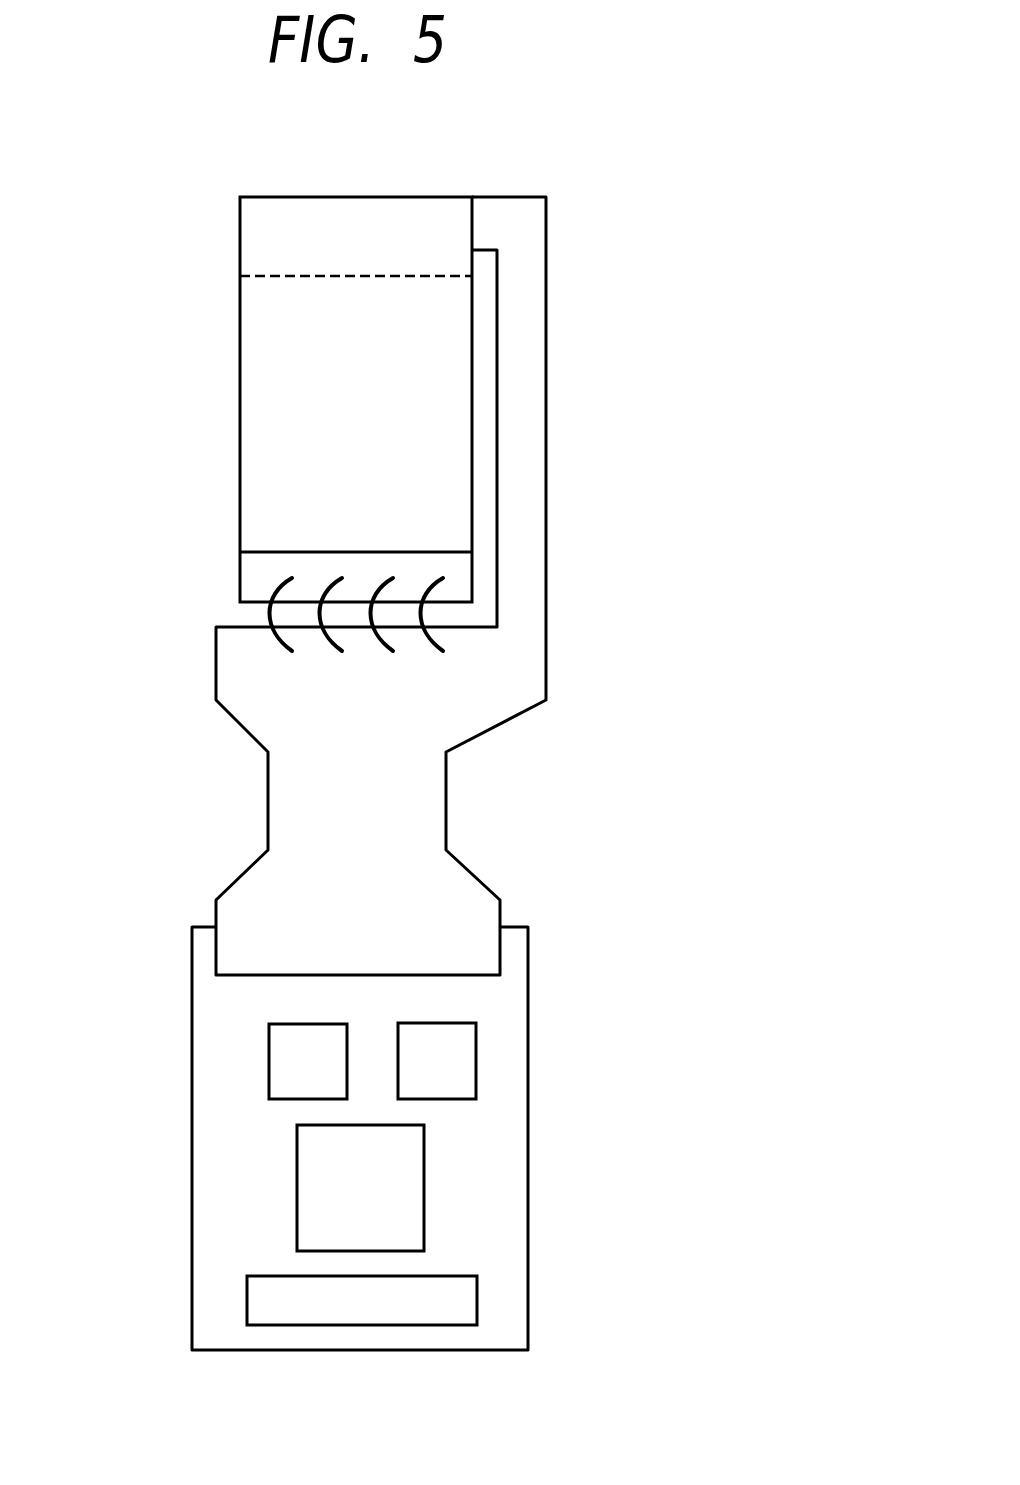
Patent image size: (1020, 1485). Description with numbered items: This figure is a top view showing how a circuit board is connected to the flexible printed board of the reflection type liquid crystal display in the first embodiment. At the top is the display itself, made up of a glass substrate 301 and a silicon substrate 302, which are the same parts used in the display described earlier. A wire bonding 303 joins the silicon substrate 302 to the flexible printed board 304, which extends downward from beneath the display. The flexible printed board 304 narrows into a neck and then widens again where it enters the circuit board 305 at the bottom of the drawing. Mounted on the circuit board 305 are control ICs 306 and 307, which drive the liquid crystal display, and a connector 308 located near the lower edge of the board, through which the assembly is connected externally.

The glass substrate 301 is at (263, 386).
The silicon substrate 302 is at (262, 573).
The wire bonding 303 is at (440, 577).
The flexible printed board 304 is at (507, 685).
The circuit board 305 is at (527, 987).
The control IC 306 is at (300, 1077).
The control IC 307 is at (392, 1175).
The connector 308 is at (458, 1302).